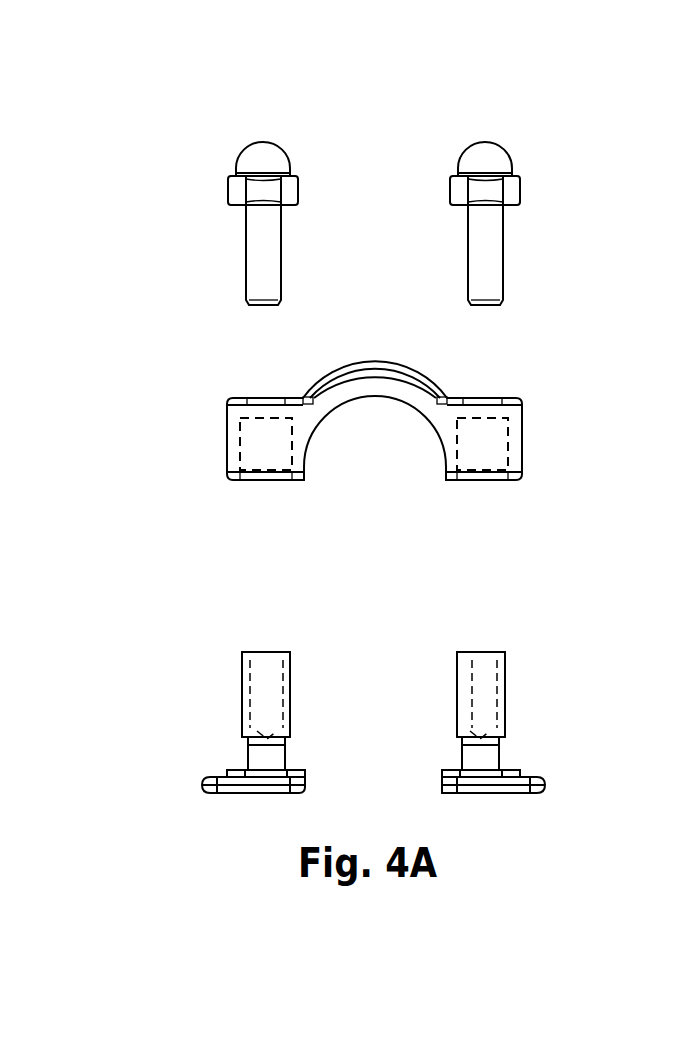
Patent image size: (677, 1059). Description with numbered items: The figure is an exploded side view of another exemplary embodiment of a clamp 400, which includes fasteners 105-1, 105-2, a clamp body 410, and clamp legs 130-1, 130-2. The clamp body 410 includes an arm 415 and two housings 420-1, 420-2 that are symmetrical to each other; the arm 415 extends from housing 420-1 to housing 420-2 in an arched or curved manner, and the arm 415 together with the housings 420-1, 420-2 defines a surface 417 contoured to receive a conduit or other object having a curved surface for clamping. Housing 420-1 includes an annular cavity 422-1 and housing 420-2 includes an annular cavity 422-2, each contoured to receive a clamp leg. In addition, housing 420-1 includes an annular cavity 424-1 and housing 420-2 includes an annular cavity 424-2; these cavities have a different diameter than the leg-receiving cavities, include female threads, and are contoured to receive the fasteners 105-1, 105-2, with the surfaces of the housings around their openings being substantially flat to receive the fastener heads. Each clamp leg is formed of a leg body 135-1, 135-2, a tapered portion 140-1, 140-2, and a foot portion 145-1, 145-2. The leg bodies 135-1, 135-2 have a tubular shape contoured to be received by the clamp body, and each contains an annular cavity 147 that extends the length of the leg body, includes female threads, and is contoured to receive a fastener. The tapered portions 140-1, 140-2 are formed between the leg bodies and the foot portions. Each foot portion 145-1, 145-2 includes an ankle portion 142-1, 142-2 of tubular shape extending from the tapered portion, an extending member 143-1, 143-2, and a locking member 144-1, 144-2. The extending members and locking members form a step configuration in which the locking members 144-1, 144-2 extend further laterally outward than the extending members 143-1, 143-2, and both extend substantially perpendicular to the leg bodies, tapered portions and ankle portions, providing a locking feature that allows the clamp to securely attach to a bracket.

The clamp 400 is at (195, 77).
The fastener 105-1 is at (485, 264).
The fastener 105-2 is at (258, 264).
The clamp body 410 is at (229, 376).
The arm 415 is at (453, 363).
The surface 417 is at (374, 405).
The housing 420-1 is at (535, 398).
The housing 420-2 is at (208, 398).
The annular cavity 422-1 is at (478, 450).
The annular cavity 422-2 is at (266, 450).
The annular cavity 424-1 is at (478, 390).
The annular cavity 424-2 is at (266, 390).
The clamp leg 130-1 is at (537, 624).
The clamp leg 130-2 is at (211, 624).
The leg body 135-1 is at (523, 652).
The leg body 135-2 is at (227, 652).
The tapered portion 140-1 is at (463, 741).
The tapered portion 140-2 is at (283, 741).
The ankle portion 142-1 is at (500, 758).
The ankle portion 142-2 is at (247, 758).
The extending member 143-1 is at (520, 771).
The extending member 143-2 is at (240, 771).
The locking member 144-1 is at (555, 776).
The locking member 144-2 is at (192, 776).
The foot portion 145-1 is at (423, 742).
The foot portion 145-2 is at (322, 795).
The annular cavity 147 is at (266, 668).